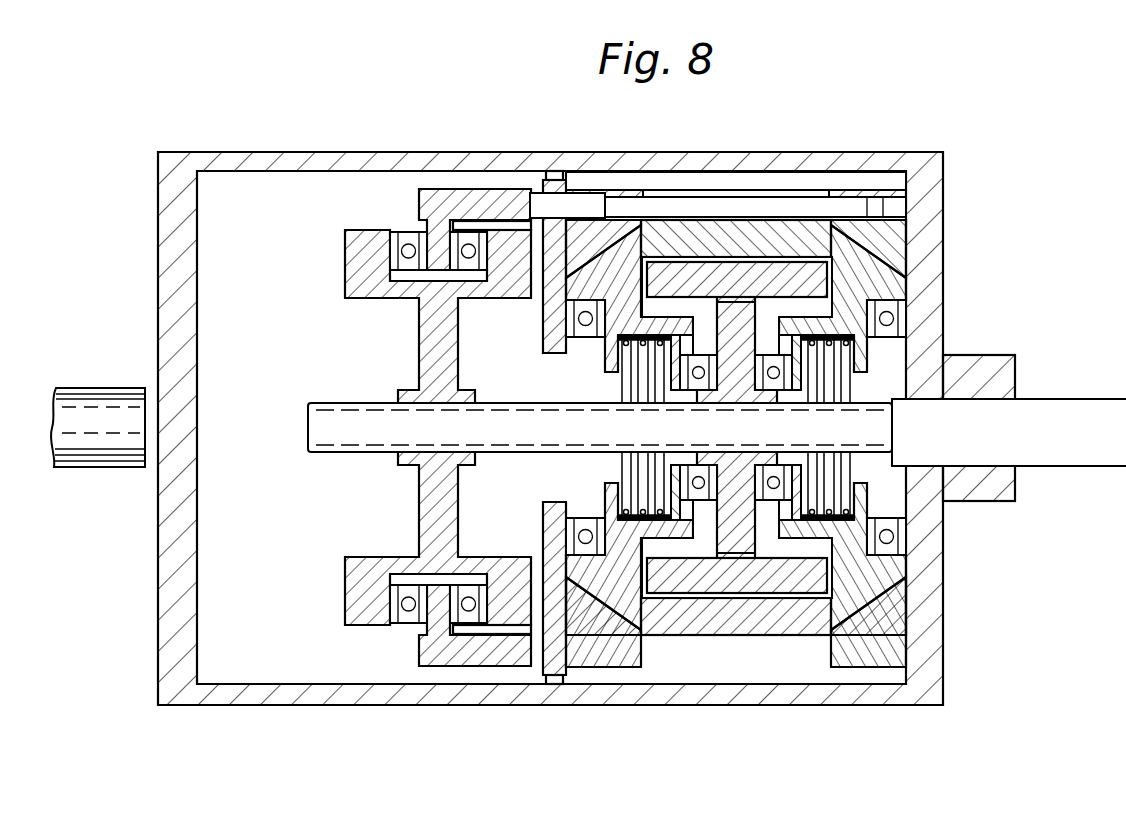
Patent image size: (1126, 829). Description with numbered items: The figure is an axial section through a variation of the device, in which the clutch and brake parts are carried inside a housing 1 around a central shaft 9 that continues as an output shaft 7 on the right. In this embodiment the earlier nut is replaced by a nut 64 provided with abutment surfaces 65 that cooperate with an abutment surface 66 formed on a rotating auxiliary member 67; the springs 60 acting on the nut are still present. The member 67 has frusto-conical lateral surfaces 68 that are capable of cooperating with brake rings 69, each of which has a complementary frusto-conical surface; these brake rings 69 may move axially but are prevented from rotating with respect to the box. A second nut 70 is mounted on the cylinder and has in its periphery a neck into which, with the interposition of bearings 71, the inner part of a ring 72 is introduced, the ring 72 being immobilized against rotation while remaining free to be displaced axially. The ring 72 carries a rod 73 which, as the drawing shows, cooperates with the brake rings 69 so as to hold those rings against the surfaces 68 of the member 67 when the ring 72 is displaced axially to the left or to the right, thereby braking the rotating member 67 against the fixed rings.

The housing 1 is at (716, 688).
The output shaft 7 is at (1084, 398).
The shaft 9 is at (516, 441).
The springs 60 is at (862, 360).
The nut 64 is at (710, 584).
The abutment surfaces 65 is at (663, 574).
The abutment surface 66 is at (641, 238).
The rotating auxiliary member 67 is at (858, 612).
The frusto-conical lateral surfaces 68 is at (614, 600).
The brake rings 69 is at (580, 642).
The second nut 70 is at (430, 512).
The bearings 71 is at (466, 622).
The ring 72 is at (486, 194).
The rod 73 is at (766, 200).